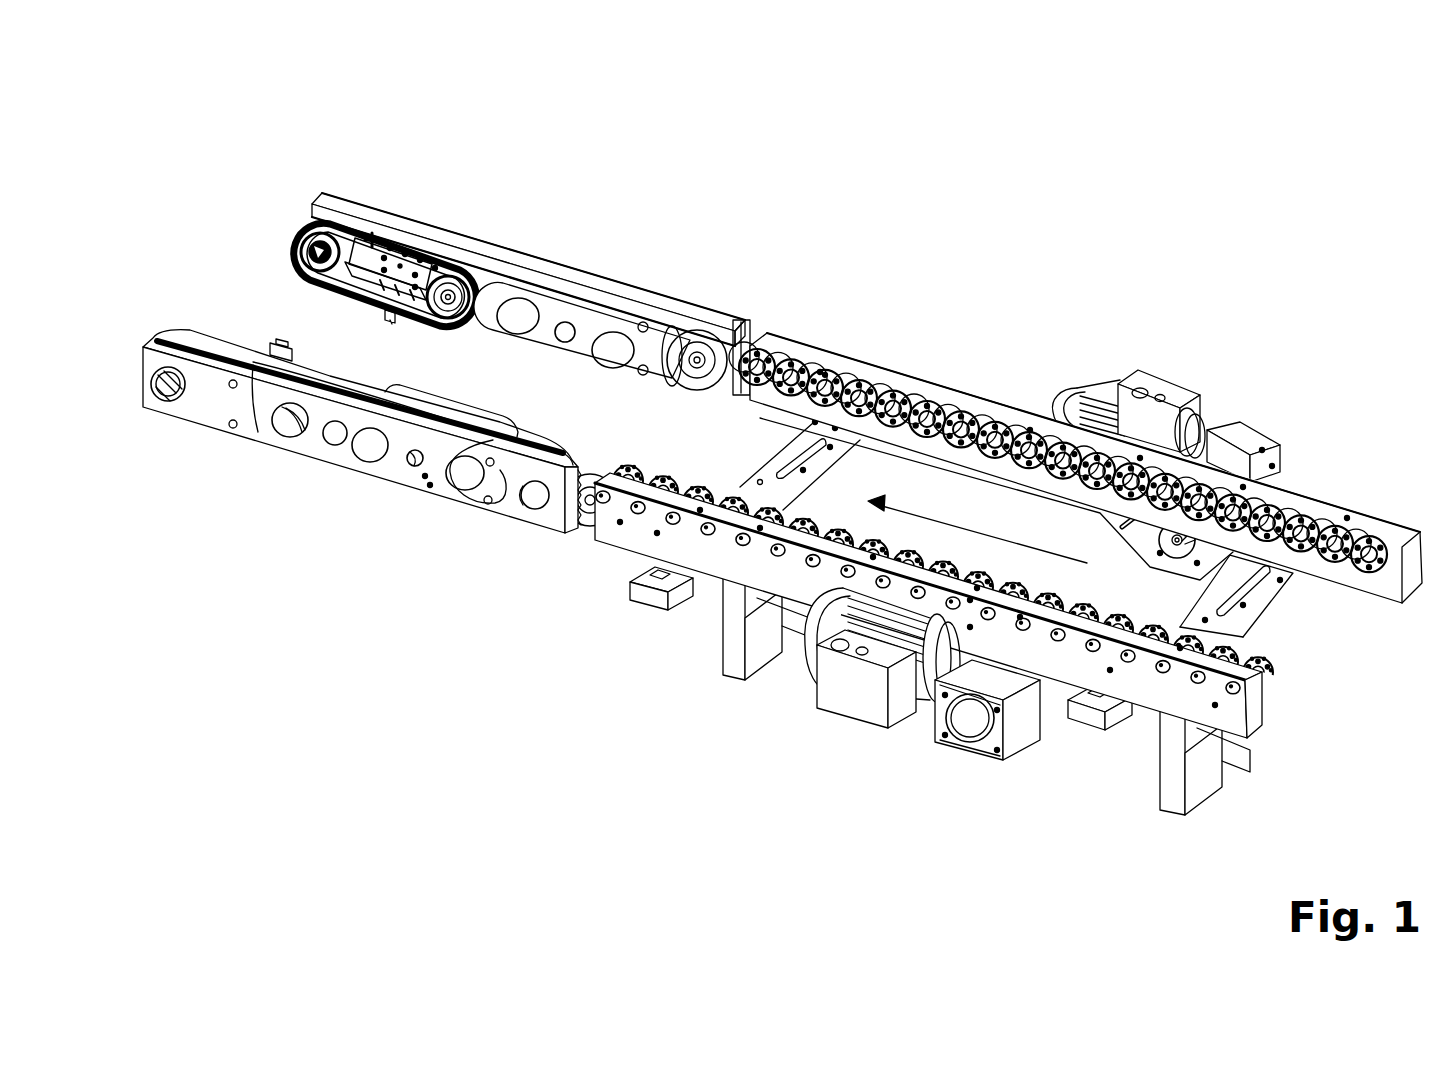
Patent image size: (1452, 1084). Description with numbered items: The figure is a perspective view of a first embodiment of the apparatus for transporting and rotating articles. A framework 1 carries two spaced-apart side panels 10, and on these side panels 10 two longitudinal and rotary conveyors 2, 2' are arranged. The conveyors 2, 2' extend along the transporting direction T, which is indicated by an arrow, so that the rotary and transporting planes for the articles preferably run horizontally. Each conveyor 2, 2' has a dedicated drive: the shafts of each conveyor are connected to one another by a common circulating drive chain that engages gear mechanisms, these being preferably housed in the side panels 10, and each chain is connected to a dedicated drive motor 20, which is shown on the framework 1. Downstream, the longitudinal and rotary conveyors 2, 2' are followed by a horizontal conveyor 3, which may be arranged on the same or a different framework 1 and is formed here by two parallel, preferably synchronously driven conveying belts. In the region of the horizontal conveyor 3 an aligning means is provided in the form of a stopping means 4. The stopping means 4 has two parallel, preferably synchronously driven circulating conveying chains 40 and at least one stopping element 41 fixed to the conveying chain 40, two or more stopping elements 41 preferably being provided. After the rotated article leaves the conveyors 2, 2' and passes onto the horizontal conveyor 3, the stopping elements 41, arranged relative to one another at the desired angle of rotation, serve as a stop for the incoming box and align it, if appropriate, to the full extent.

The framework 1 is at (1352, 480).
The longitudinal and rotary conveyor 2 is at (1058, 433).
The longitudinal and rotary conveyor 2' is at (943, 600).
The horizontal conveyor 3 is at (570, 280).
The stopping means 4 is at (268, 244).
The side panel 10 is at (1417, 580).
The drive motor 20 is at (1173, 390).
The conveying chain 40 is at (414, 247).
The stopping element 41 is at (368, 230).